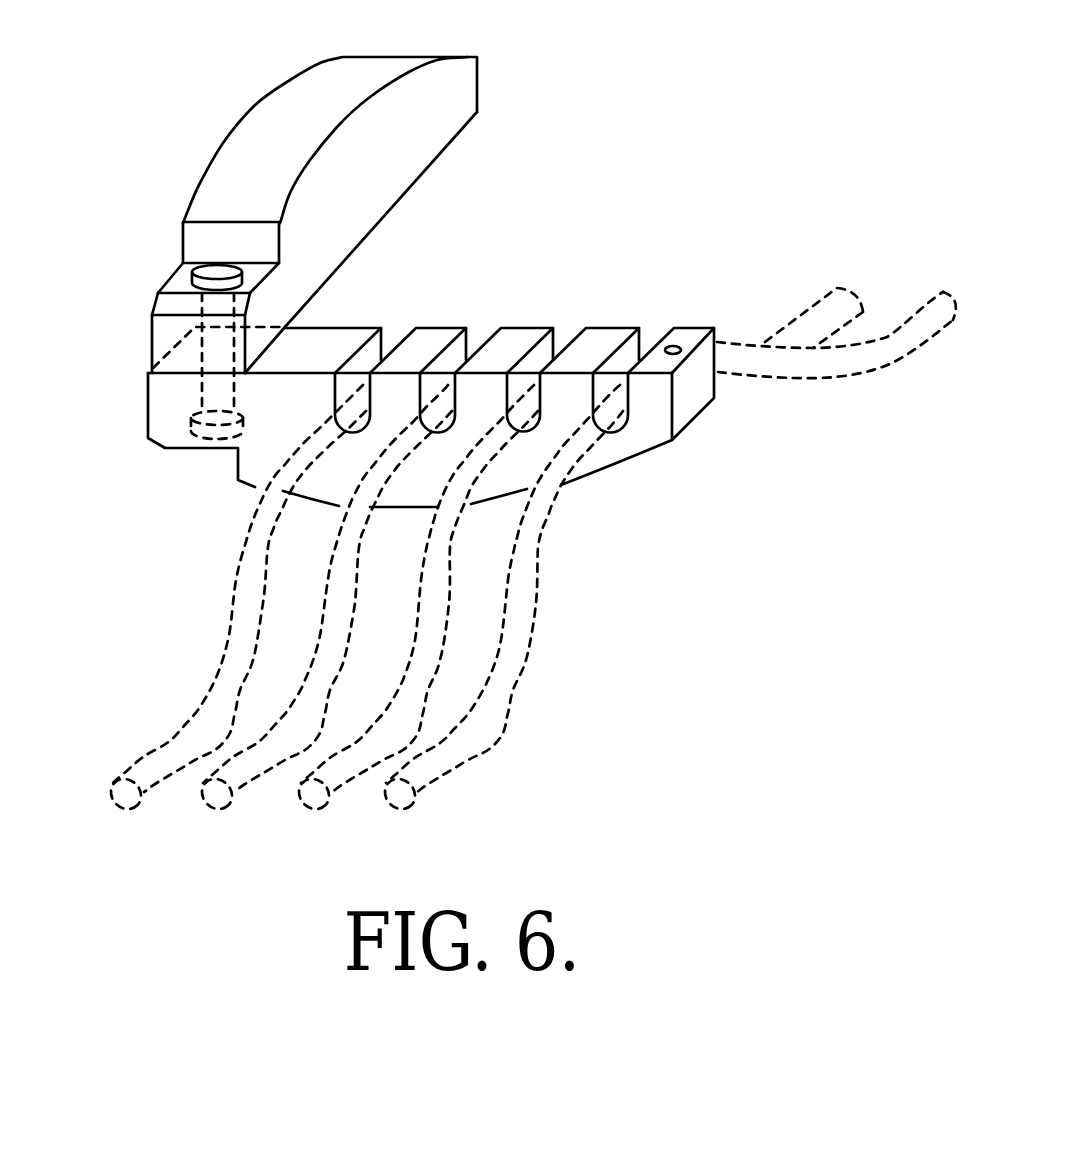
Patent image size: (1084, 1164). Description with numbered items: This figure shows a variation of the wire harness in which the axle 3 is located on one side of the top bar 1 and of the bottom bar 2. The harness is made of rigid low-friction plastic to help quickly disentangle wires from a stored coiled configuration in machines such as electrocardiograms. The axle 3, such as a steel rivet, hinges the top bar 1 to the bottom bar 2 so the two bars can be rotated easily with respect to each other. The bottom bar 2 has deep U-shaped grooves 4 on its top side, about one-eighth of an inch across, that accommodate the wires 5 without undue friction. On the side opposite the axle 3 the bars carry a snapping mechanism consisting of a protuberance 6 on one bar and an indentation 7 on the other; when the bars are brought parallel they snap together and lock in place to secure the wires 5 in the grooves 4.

The top bar 1 is at (483, 92).
The bottom bar 2 is at (662, 443).
The axle 3 is at (207, 278).
The U-shaped grooves 4 is at (619, 432).
The wires 5 is at (520, 667).
The protuberance 6 is at (433, 168).
The indentation 7 is at (678, 345).